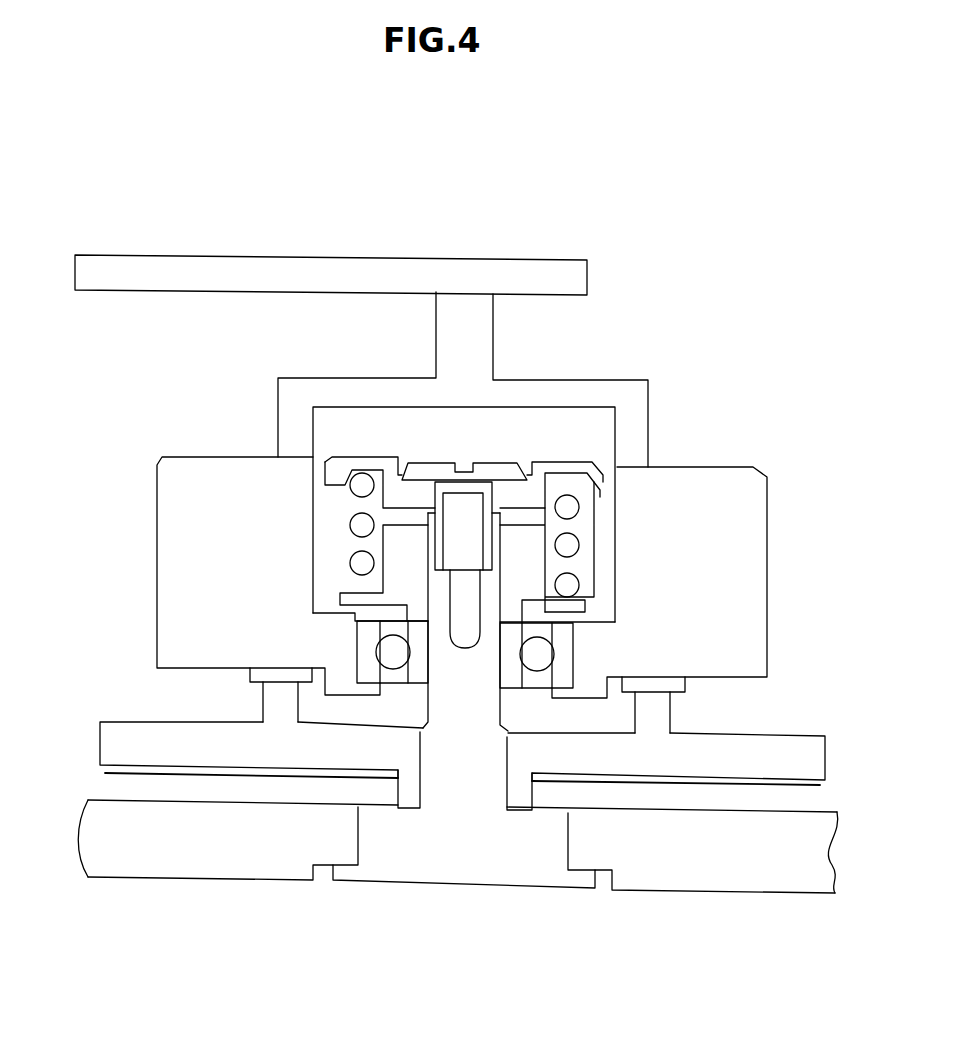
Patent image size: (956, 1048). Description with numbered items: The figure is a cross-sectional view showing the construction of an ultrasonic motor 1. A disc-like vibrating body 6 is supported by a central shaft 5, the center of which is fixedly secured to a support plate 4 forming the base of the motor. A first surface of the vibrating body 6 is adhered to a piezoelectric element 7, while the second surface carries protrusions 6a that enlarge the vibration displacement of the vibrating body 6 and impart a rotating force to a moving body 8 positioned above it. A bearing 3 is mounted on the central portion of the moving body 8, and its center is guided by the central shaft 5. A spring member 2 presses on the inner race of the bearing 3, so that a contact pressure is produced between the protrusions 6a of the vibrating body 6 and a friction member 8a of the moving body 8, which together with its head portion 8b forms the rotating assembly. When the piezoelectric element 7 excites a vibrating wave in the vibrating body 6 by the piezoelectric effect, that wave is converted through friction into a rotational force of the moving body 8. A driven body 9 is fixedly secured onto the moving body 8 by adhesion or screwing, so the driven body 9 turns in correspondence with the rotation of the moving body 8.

The rotary table / indexing apparatus 1 is at (745, 352).
The spring member 2 is at (597, 505).
The bearing 3 is at (567, 648).
The support plate 4 is at (708, 858).
The central shaft 5 is at (442, 767).
The vibrating body 6 is at (257, 745).
The protrusions 6a is at (277, 715).
The piezoelectric element 7 is at (318, 772).
The moving body 8 is at (125, 318).
The friction member 8a is at (172, 454).
The holder head 8b is at (283, 673).
The driven body 9 is at (543, 280).